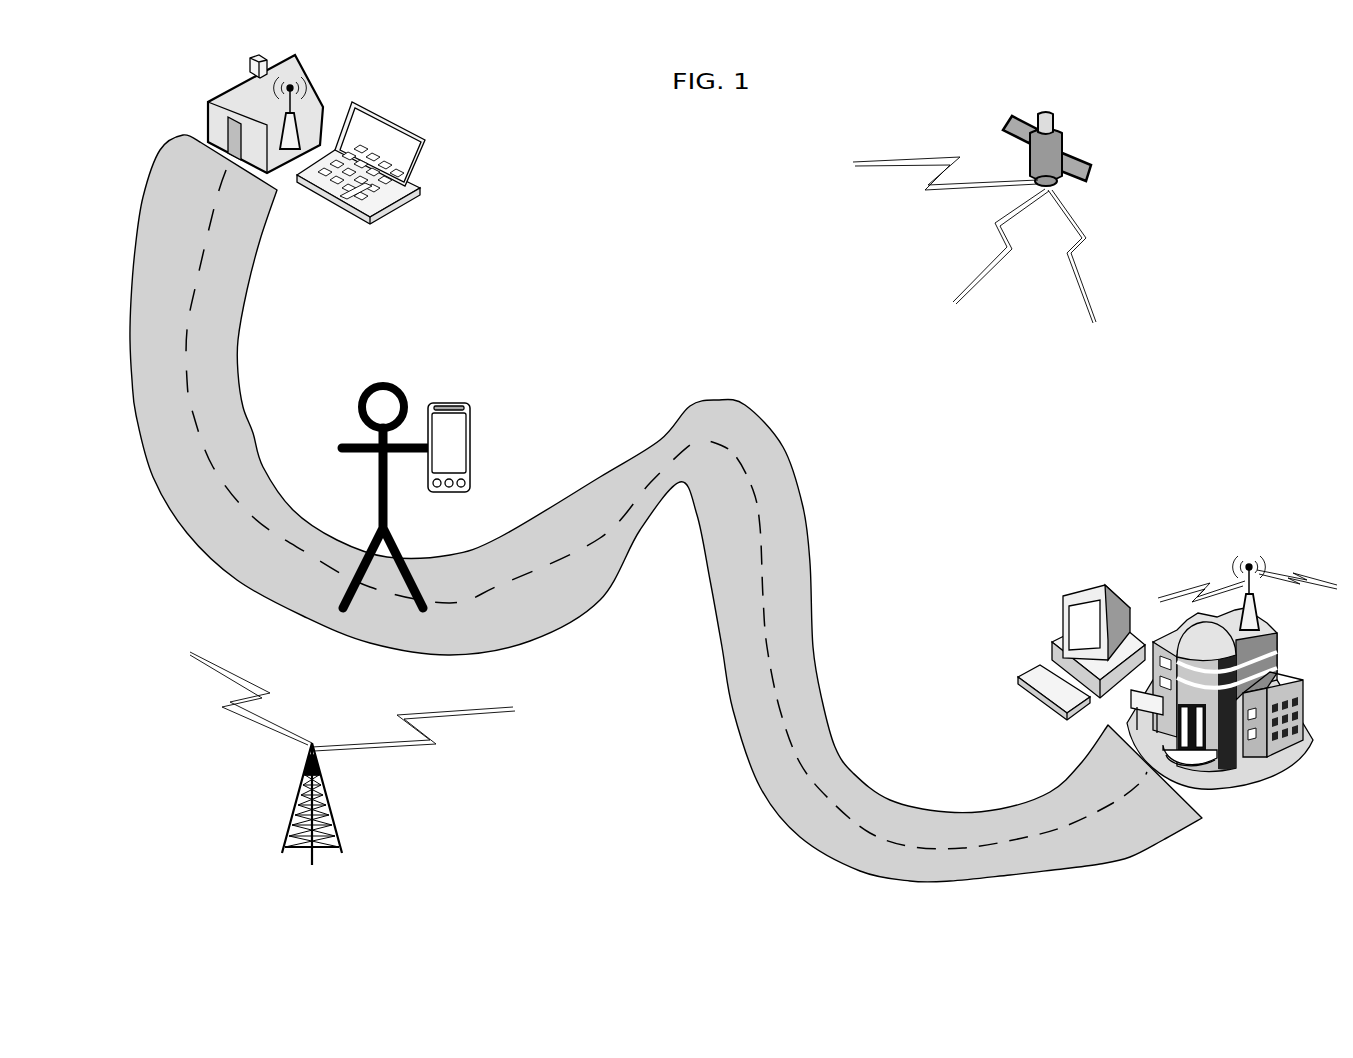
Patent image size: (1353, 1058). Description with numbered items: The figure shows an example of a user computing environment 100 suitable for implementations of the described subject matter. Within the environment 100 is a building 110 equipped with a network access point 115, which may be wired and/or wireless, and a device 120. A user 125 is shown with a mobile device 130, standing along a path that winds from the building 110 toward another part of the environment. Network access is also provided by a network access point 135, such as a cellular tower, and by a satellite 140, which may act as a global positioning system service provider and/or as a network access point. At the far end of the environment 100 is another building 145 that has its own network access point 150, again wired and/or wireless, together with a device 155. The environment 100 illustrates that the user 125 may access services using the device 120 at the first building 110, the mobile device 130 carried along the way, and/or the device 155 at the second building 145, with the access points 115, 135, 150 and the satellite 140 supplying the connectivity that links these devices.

The environment 100 is at (547, 110).
The building 110 is at (208, 102).
The network access point 115 is at (297, 118).
The device 120 is at (378, 220).
The user 125 is at (362, 399).
The mobile device 130 is at (470, 448).
The network access point 135 is at (333, 825).
The satellite 140 is at (1062, 130).
The building 145 is at (1237, 782).
The network access point 150 is at (1243, 567).
The device 155 is at (1062, 608).